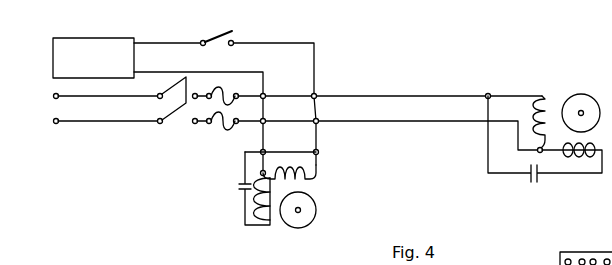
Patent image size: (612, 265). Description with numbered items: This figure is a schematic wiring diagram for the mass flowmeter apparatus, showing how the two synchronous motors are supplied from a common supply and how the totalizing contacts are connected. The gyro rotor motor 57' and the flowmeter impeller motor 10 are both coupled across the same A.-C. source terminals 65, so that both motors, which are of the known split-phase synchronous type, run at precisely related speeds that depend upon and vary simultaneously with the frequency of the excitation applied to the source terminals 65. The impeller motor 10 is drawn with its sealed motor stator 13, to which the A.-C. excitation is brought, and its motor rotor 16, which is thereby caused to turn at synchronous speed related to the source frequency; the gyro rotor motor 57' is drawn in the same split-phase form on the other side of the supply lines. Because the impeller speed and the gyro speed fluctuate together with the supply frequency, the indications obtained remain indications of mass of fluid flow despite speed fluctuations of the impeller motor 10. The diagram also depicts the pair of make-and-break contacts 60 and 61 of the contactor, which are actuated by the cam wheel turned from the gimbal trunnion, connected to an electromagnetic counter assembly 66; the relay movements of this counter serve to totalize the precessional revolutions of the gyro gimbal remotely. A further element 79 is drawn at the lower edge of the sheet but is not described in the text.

The electromagnetic counter assembly 66 is at (55, 50).
The make-and-break contact 60 is at (215, 33).
The make-and-break contact 61 is at (234, 41).
The A.-C. source terminals 65 is at (58, 123).
The synchronous electric motor 10 is at (280, 198).
The motor stator 13 is at (258, 205).
The motor rotor 16 is at (312, 222).
The gyro rotor motor 57' is at (545, 123).
The terminal block 79 is at (589, 251).